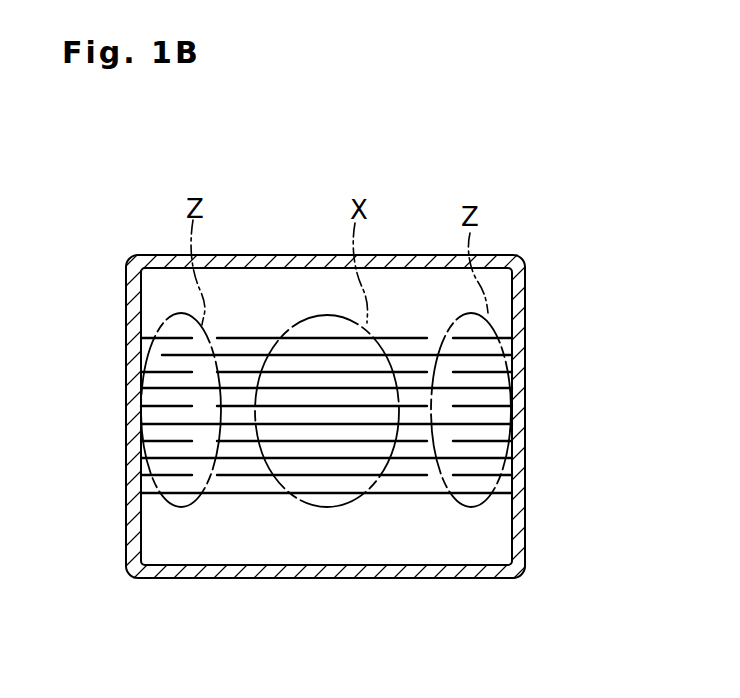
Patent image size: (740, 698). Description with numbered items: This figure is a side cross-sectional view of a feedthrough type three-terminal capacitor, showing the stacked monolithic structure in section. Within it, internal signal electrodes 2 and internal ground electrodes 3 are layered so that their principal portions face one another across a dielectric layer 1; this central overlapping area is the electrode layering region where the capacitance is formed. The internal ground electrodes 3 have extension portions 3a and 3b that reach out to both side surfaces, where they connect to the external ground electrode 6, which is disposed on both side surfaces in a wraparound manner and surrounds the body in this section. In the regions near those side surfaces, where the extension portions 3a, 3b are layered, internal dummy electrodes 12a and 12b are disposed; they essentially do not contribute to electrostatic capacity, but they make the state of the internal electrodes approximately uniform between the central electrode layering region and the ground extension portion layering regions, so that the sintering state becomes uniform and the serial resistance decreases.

The dielectric layer 1 is at (329, 427).
The internal signal electrodes 2 is at (225, 477).
The internal ground electrodes 3 is at (329, 497).
The extension portion of internal ground electrode 3a is at (142, 377).
The extension portion of internal ground electrode 3b is at (500, 378).
The external ground electrode 6 is at (528, 447).
The internal dummy electrode 12a is at (168, 318).
The internal dummy electrode 12b is at (492, 338).